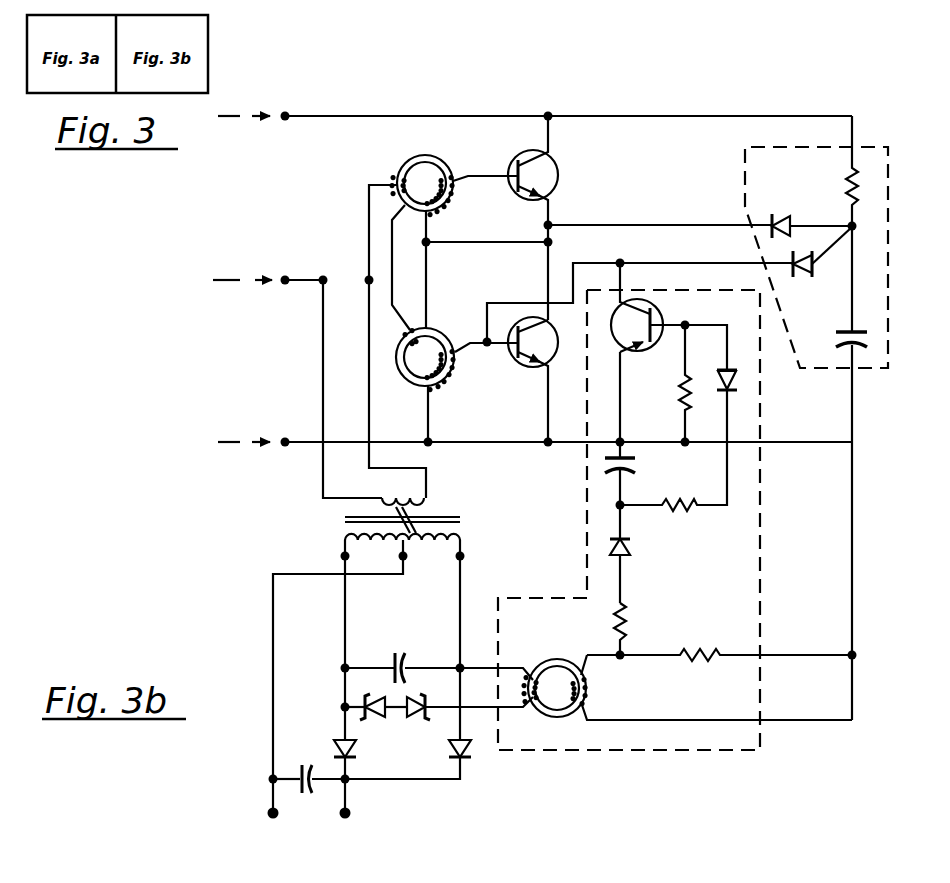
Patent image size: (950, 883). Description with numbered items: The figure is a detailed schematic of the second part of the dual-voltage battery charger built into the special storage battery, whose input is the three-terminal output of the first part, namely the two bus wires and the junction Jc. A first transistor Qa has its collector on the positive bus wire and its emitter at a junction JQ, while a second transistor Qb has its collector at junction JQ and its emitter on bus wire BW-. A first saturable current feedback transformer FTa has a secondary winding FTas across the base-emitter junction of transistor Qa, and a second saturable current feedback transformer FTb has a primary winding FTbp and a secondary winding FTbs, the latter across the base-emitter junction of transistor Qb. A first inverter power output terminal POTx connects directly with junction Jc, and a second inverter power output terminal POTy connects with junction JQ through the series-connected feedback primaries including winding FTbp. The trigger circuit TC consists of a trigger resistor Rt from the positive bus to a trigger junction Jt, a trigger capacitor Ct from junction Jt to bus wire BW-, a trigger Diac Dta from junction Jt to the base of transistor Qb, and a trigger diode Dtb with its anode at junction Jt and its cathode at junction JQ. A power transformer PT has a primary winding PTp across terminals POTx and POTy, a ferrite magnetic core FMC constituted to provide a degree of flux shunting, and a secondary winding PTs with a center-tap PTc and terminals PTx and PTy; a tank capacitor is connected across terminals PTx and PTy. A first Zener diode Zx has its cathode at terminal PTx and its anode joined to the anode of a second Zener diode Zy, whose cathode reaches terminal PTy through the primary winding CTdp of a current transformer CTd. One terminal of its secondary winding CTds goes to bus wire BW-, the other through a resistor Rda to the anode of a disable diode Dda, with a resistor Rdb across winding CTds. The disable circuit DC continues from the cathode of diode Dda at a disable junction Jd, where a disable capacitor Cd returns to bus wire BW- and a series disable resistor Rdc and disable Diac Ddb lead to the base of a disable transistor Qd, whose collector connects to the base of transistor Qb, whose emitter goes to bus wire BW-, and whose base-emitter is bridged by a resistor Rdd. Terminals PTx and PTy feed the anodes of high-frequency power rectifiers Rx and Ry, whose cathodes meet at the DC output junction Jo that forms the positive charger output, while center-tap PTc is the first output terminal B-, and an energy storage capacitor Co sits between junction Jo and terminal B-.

The bus wire BW- is at (311, 440).
The first inverter power output terminal POTx is at (322, 277).
The second inverter power output terminal POTy is at (367, 277).
The junction Jc is at (283, 284).
The first saturable current feedback transformer FTa is at (421, 154).
The secondary winding FTas is at (456, 203).
The second saturable current feedback transformer FTb is at (446, 319).
The primary winding FTbp is at (418, 326).
The secondary winding FTbs is at (448, 380).
The first transistor Qa is at (556, 165).
The second transistor Qb is at (527, 362).
The junction JQ is at (552, 223).
The trigger circuit TC is at (791, 142).
The trigger resistor Rt is at (845, 196).
The trigger junction Jt is at (856, 230).
The trigger diode Dtb is at (781, 214).
The trigger Diac Dta is at (801, 278).
The trigger capacitor Ct is at (856, 331).
The disable circuit DC is at (687, 757).
The disable transistor Qd is at (663, 312).
The resistor Rdd is at (680, 396).
The disable Diac Ddb is at (734, 392).
The disable capacitor Cd is at (640, 461).
The disable junction Jd is at (615, 507).
The disable resistor Rdc is at (688, 511).
The disable diode Dda is at (629, 553).
The resistor Rda is at (632, 618).
The resistor Rdb is at (700, 661).
The current transformer CTd is at (557, 728).
The primary winding CTdp is at (530, 680).
The secondary winding CTds is at (590, 688).
The power transformer PT is at (402, 537).
The primary winding PTp is at (401, 500).
The ferrite magnetic core FMC is at (446, 518).
The secondary winding PTs is at (378, 541).
The terminal PTx is at (341, 556).
The terminal PTy is at (465, 558).
The center-tap PTc is at (408, 560).
The first Zener diode Zx is at (362, 701).
The second Zener diode Zy is at (415, 717).
The first high-frequency power rectifier Rx is at (342, 745).
The second high-frequency power rectifier Ry is at (467, 760).
The energy storage capacitor Co is at (300, 770).
The DC output junction Jo is at (349, 784).
The first battery charger output terminal B- is at (270, 818).